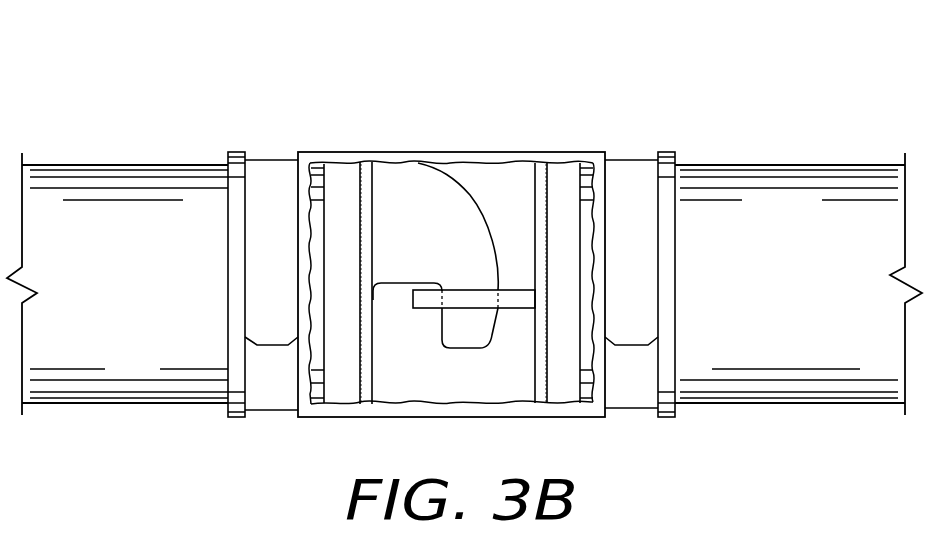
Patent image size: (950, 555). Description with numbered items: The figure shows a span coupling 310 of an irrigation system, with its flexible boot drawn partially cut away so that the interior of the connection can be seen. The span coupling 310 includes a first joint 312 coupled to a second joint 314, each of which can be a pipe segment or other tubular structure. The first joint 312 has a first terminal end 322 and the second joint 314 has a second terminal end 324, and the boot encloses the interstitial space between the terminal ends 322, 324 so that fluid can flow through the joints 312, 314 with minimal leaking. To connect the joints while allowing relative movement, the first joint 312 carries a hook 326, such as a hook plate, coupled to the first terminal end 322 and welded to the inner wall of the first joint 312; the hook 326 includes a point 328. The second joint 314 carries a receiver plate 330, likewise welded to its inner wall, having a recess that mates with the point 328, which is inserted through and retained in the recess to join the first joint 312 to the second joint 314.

The span coupling 310 is at (482, 63).
The first joint 312 is at (105, 175).
The second joint 314 is at (770, 176).
The first terminal end 322 is at (373, 373).
The second terminal end 324 is at (532, 347).
The hook 326 is at (487, 198).
The point 328 is at (442, 331).
The receiver plate 330 is at (522, 298).